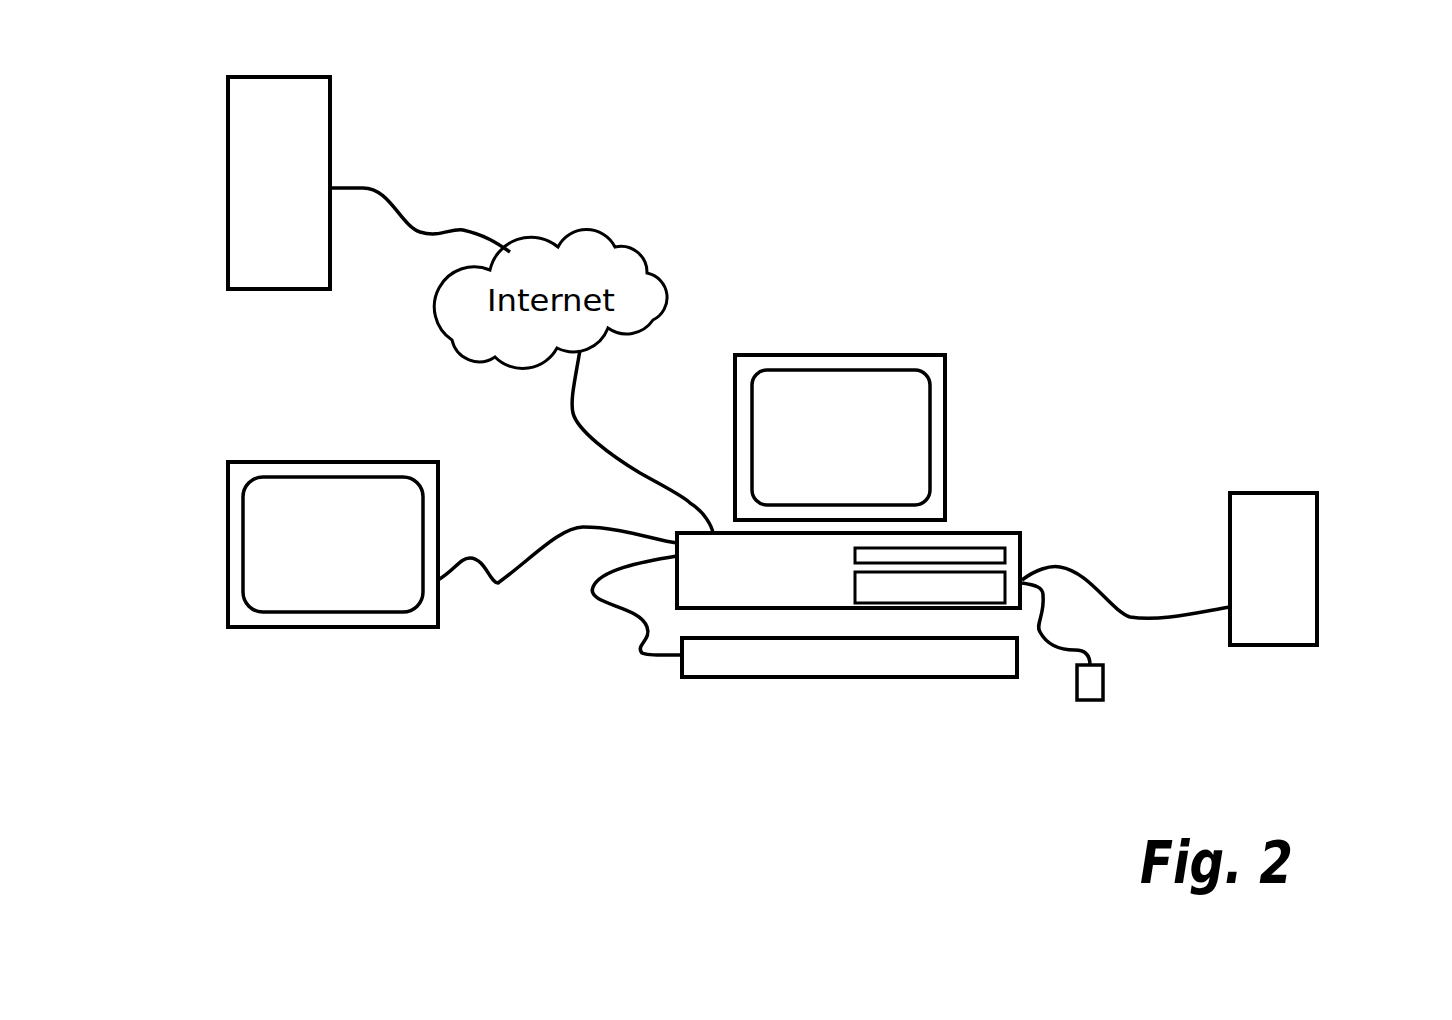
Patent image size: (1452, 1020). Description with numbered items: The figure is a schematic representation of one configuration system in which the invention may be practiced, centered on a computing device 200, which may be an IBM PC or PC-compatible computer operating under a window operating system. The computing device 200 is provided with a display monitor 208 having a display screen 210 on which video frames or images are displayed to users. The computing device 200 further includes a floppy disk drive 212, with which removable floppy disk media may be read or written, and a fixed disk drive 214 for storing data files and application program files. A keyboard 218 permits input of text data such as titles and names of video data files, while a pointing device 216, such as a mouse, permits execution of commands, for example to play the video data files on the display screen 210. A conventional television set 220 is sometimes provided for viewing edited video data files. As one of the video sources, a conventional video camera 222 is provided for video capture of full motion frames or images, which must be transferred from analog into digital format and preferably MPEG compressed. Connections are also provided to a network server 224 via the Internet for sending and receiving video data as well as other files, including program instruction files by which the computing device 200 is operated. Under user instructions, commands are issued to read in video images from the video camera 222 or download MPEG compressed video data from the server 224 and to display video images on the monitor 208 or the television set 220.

The computing device 200 is at (1098, 267).
The display monitor 208 is at (950, 437).
The display screen 210 is at (830, 417).
The floppy disk drive 212 is at (967, 555).
The fixed disk drive 214 is at (983, 582).
The pointing device 216 is at (1087, 707).
The keyboard 218 is at (703, 685).
The television set 220 is at (222, 587).
The video camera 222 is at (1325, 525).
The network server 224 is at (228, 250).